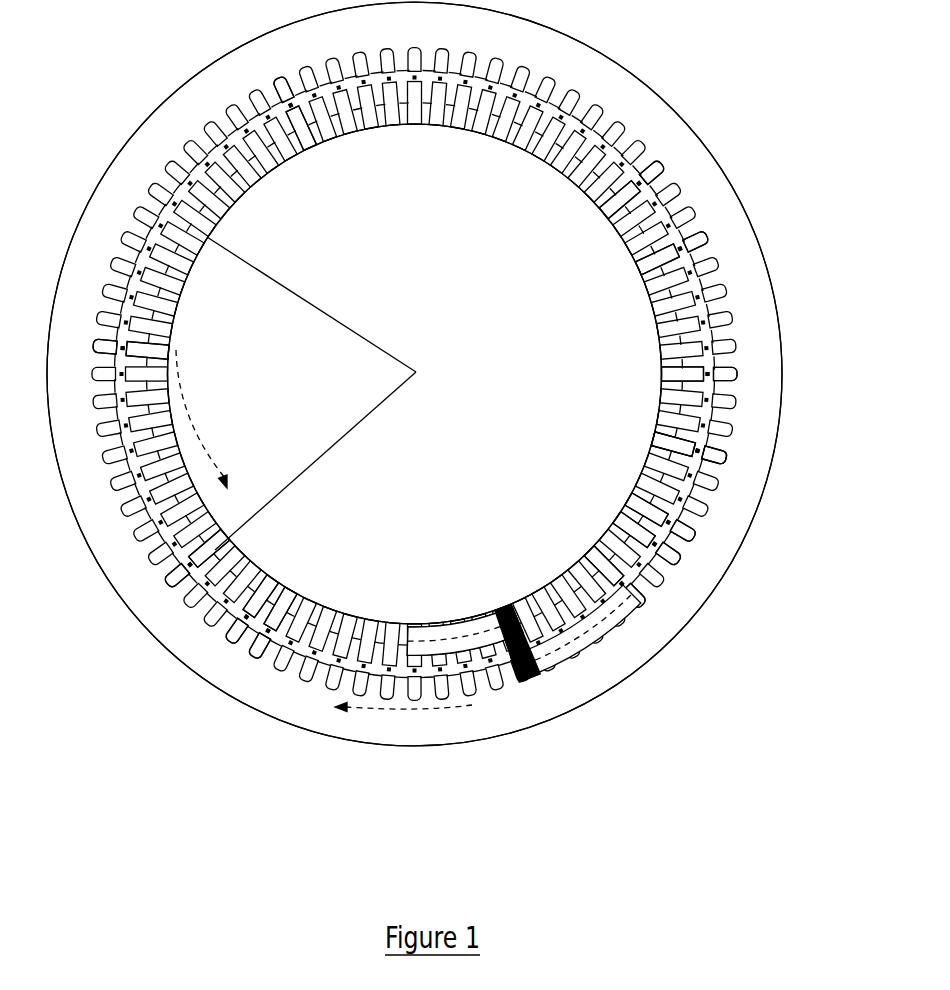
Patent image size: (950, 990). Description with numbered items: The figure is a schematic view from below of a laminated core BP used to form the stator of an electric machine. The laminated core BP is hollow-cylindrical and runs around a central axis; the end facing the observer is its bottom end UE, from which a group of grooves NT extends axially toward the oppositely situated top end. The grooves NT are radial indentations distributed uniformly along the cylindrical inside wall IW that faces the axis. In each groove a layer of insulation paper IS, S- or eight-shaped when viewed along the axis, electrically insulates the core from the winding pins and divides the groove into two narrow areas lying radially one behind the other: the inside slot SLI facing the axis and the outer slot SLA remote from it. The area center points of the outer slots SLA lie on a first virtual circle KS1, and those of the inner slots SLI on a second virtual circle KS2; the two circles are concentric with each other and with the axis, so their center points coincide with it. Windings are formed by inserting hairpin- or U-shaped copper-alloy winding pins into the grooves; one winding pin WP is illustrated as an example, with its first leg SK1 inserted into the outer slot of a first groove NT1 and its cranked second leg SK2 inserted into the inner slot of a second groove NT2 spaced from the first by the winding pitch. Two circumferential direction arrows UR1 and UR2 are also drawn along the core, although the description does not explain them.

The laminated core BP is at (739, 84).
The inside wall IW is at (547, 158).
The bottom end UE is at (552, 692).
The grooves NT is at (640, 262).
The insulation paper IS is at (717, 372).
The second circumferential direction UR2 is at (213, 419).
The inside slot SLI is at (660, 437).
The outer slot SLA is at (690, 531).
The first groove NT1 is at (607, 547).
The second groove NT2 is at (408, 624).
The second leg SK2 is at (416, 638).
The first leg SK1 is at (647, 598).
The winding pin WP is at (512, 610).
The second circle KS2 is at (197, 540).
The first circle KS1 is at (227, 620).
The first circumferential direction UR1 is at (403, 722).